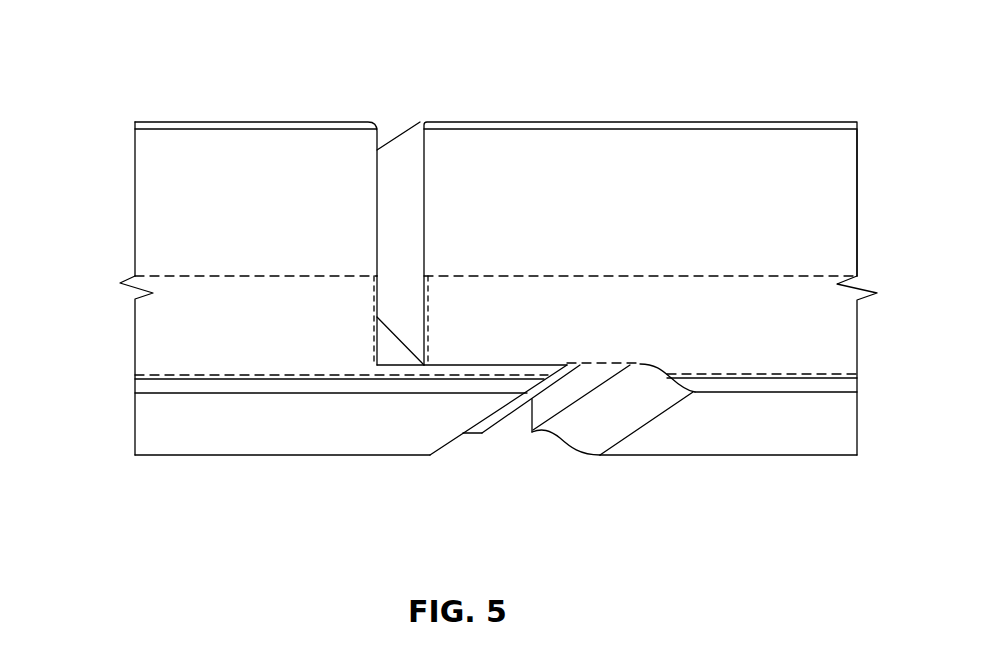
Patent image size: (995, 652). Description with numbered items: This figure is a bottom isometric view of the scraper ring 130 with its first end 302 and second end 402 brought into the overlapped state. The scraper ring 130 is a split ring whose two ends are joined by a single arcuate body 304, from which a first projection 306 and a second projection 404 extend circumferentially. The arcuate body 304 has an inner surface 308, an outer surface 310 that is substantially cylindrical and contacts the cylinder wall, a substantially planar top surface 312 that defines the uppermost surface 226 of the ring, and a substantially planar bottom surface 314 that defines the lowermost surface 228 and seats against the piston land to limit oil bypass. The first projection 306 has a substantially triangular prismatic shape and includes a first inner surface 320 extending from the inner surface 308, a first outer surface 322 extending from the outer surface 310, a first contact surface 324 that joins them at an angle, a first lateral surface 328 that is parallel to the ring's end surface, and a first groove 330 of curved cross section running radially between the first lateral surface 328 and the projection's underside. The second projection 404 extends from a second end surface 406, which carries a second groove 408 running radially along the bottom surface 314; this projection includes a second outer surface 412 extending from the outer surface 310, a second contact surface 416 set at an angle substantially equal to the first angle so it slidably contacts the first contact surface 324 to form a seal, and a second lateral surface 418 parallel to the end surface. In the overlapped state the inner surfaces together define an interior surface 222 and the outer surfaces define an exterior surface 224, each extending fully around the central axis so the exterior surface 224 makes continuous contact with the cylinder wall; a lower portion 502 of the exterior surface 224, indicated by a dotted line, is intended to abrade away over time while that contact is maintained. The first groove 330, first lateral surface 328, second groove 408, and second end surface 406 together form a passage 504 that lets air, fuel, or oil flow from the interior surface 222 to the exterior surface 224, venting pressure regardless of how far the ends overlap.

The scraper ring 130 is at (133, 27).
The first end 302 is at (317, 77).
The outer surface 310 is at (157, 158).
The arcuate body 304 is at (157, 205).
The second lateral surface 418 is at (403, 243).
The first contact surface 324 is at (395, 350).
The second contact surface 416 is at (403, 337).
The first projection 306 is at (396, 438).
The inner surface 308 is at (260, 455).
The bottom surface 314 is at (188, 443).
The first inner surface 320 is at (405, 455).
The first outer surface 322 is at (517, 372).
The first groove 330 is at (455, 438).
The first lateral surface 328 is at (505, 423).
The second end 402 is at (487, 72).
The second projection 404 is at (443, 201).
The second outer surface 412 is at (527, 137).
The uppermost surface 226 is at (642, 123).
The top surface 312 is at (785, 120).
The exterior surface 224 is at (827, 217).
The interior surface 222 is at (680, 457).
The lower portion 502 is at (740, 365).
The lowermost surface 228 is at (840, 442).
The passage 504 is at (485, 498).
The second end surface 406 is at (573, 380).
The second groove 408 is at (567, 440).